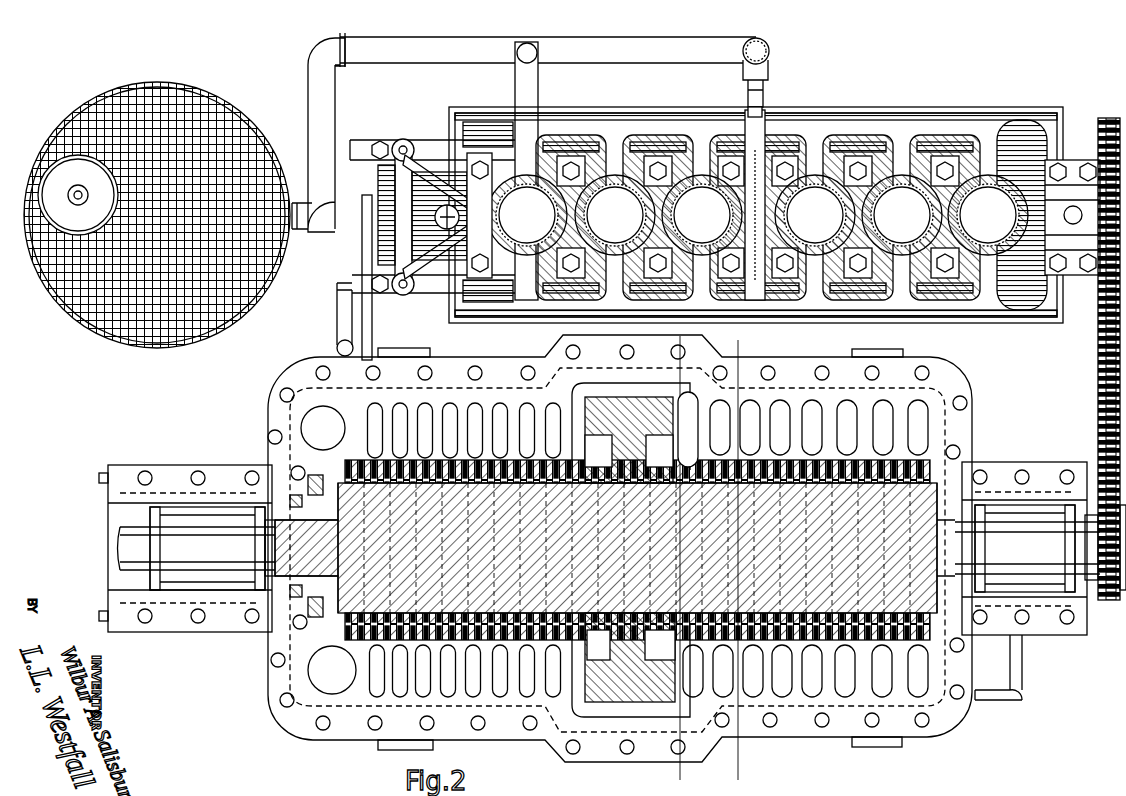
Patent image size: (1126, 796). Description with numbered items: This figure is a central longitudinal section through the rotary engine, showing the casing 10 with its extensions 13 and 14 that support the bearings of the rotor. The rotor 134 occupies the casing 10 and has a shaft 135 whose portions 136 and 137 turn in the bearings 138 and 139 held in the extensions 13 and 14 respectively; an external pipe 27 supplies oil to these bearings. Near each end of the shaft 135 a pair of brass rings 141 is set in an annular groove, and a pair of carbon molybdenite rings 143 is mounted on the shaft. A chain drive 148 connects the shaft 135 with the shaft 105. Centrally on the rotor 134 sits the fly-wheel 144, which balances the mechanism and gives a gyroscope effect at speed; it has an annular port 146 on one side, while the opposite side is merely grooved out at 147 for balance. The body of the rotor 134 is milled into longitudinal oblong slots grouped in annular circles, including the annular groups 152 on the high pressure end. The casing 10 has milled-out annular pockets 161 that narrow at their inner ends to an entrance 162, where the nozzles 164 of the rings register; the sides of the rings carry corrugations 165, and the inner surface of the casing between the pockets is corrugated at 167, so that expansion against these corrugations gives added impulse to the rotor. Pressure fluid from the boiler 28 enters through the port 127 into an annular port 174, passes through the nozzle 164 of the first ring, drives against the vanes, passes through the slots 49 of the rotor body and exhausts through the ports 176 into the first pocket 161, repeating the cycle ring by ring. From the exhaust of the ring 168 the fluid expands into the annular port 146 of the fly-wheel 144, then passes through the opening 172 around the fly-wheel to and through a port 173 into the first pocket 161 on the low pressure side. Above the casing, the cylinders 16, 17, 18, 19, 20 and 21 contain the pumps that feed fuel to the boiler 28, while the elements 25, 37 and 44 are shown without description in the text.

The casing 10 is at (945, 380).
The extension 13 is at (428, 193).
The extension 14 is at (1062, 272).
The cylinder 16 is at (988, 215).
The cylinder 17 is at (945, 217).
The cylinder 18 is at (858, 217).
The cylinder 19 is at (758, 217).
The cylinder 20 is at (691, 459).
The cylinder 21 is at (617, 461).
The cylinder block housing 25 is at (815, 312).
The external pipe 27 is at (1025, 680).
The boiler 28 is at (140, 346).
The connecting rod 37 is at (526, 171).
The rod 44 is at (755, 203).
The slots of the rotor body 49 is at (468, 66).
The shaft 105 is at (358, 218).
The port 127 is at (328, 550).
The rotor 134 is at (318, 628).
The shaft 135 is at (122, 548).
The shaft portion 136 is at (197, 548).
The shaft portion 137 is at (1027, 548).
The bearing 138 is at (196, 513).
The bearing 139 is at (1016, 508).
The brass rings 141 is at (296, 503).
The carbon molybdenite rings 143 is at (320, 478).
The fly-wheel 144 is at (608, 398).
The annular port 146 is at (598, 451).
The groove 147 is at (659, 451).
The chain drive 148 is at (1096, 382).
The annular groups of slots 152 is at (312, 598).
The annular pockets 161 is at (378, 416).
The narrow entrance 162 is at (428, 445).
The nozzles 164 is at (305, 466).
The corrugations 165 is at (548, 665).
The corrugations 167 is at (718, 428).
The ring 168 is at (772, 440).
The opening 172 is at (631, 551).
The port 173 is at (692, 410).
The annular port 174 is at (335, 466).
The ports 176 is at (368, 410).